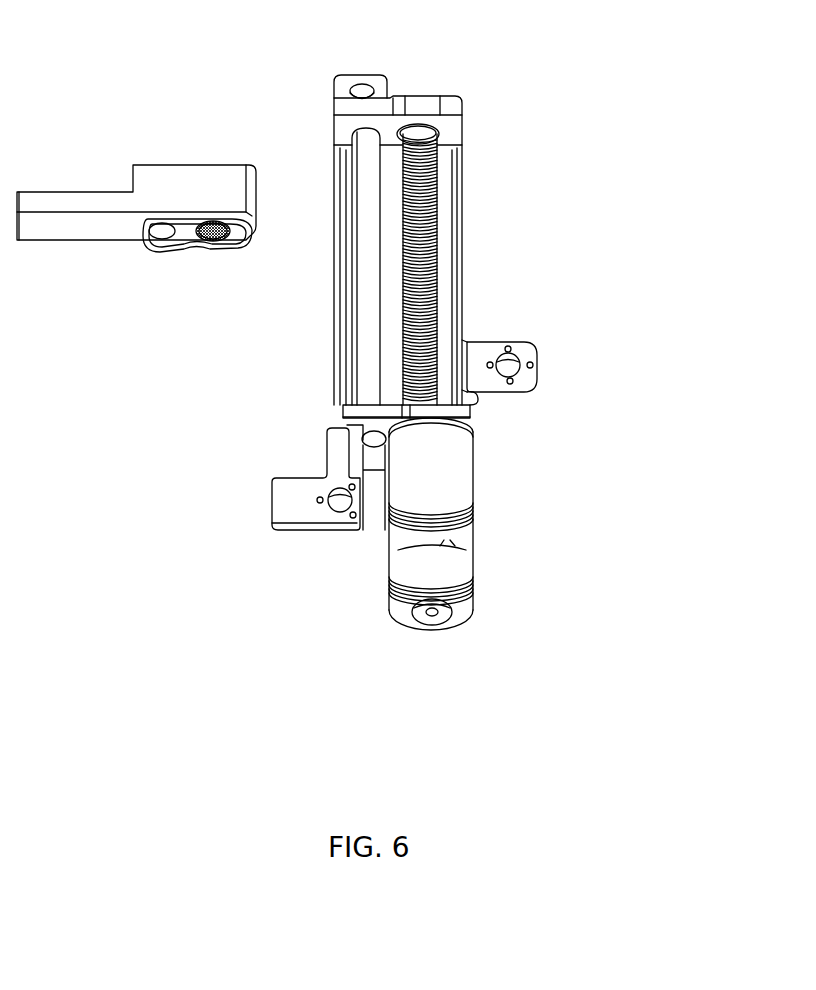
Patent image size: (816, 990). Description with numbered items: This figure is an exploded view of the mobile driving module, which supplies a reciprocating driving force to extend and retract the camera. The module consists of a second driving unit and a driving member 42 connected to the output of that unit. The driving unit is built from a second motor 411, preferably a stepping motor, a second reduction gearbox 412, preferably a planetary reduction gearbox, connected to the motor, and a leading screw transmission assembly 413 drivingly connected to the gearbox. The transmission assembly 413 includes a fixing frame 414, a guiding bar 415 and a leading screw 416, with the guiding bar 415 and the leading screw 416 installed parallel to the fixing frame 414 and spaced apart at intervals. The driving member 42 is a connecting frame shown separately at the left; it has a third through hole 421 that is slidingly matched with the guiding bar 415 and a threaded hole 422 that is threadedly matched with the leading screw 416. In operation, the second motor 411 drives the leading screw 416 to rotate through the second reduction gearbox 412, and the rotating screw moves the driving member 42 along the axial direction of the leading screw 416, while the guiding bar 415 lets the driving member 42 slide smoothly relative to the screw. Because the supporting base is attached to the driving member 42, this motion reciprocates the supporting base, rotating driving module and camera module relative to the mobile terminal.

The driving member 42 is at (78, 200).
The third through hole 421 is at (162, 232).
The threaded hole 422 is at (213, 238).
The second motor 411 is at (452, 562).
The second reduction gearbox 412 is at (440, 477).
The transmission assembly 413 is at (491, 302).
The fixing frame 414 is at (541, 345).
The guiding bar 415 is at (367, 287).
The leading screw 416 is at (438, 158).